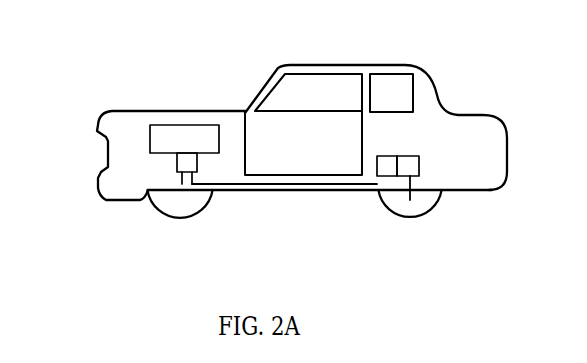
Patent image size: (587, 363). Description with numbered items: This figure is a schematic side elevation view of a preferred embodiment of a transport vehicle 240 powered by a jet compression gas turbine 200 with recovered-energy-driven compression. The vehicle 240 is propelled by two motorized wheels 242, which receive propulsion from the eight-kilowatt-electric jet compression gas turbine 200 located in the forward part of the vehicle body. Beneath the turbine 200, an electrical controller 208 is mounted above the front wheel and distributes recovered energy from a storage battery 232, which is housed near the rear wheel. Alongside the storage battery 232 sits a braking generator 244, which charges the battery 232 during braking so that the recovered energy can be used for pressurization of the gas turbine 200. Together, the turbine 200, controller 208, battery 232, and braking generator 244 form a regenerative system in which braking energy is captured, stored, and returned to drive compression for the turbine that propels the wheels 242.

The jet compression gas turbine 200 is at (160, 145).
The transport vehicle 240 is at (212, 115).
The electrical controller 208 is at (180, 170).
The motorized wheels 242 is at (180, 207).
The storage battery 232 is at (390, 167).
The braking generator 244 is at (413, 167).